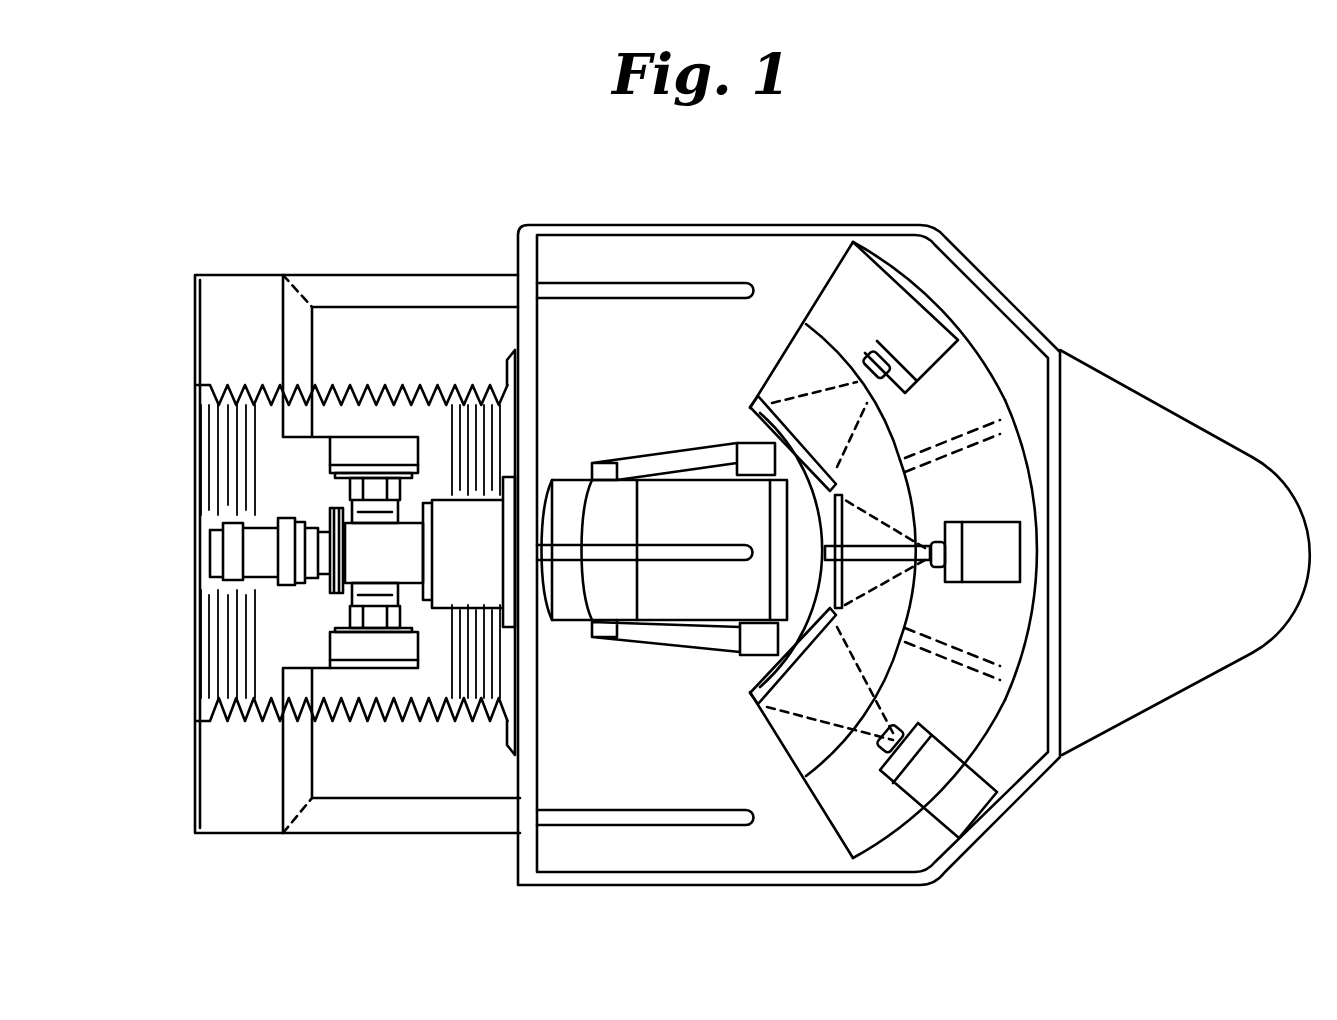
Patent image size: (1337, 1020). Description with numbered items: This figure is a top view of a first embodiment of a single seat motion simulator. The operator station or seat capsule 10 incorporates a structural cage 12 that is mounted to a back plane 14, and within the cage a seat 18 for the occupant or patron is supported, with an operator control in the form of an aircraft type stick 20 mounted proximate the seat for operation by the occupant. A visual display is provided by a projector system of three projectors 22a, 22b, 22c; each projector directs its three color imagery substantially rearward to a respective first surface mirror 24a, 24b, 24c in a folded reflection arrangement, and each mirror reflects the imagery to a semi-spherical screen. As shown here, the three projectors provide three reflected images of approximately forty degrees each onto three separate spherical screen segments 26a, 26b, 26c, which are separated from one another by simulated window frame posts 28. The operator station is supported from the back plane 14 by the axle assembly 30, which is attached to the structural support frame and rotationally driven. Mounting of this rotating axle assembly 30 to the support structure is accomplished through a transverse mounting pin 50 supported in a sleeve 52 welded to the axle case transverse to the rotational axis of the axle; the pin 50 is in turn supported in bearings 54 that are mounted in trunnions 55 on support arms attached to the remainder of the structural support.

The seat capsule 10 is at (1000, 266).
The structural cage 12 is at (993, 837).
The back plane 14 is at (520, 240).
The seat 18 is at (612, 505).
The aircraft type stick 20 is at (748, 652).
The projector 22a is at (980, 793).
The projector 22b is at (1010, 547).
The projector 22c is at (917, 330).
The first surface mirror 24a is at (783, 705).
The first surface mirror 24b is at (842, 530).
The first surface mirror 24c is at (833, 395).
The spherical screen segment 26a is at (970, 712).
The spherical screen segment 26b is at (990, 620).
The spherical screen segment 26c is at (947, 377).
The simulated window frame posts 28 is at (970, 423).
The axle assembly 30 is at (411, 503).
The transverse mounting pin 50 is at (342, 620).
The sleeve 52 is at (352, 592).
The bearings 54 is at (347, 490).
The trunnions 55 is at (333, 458).